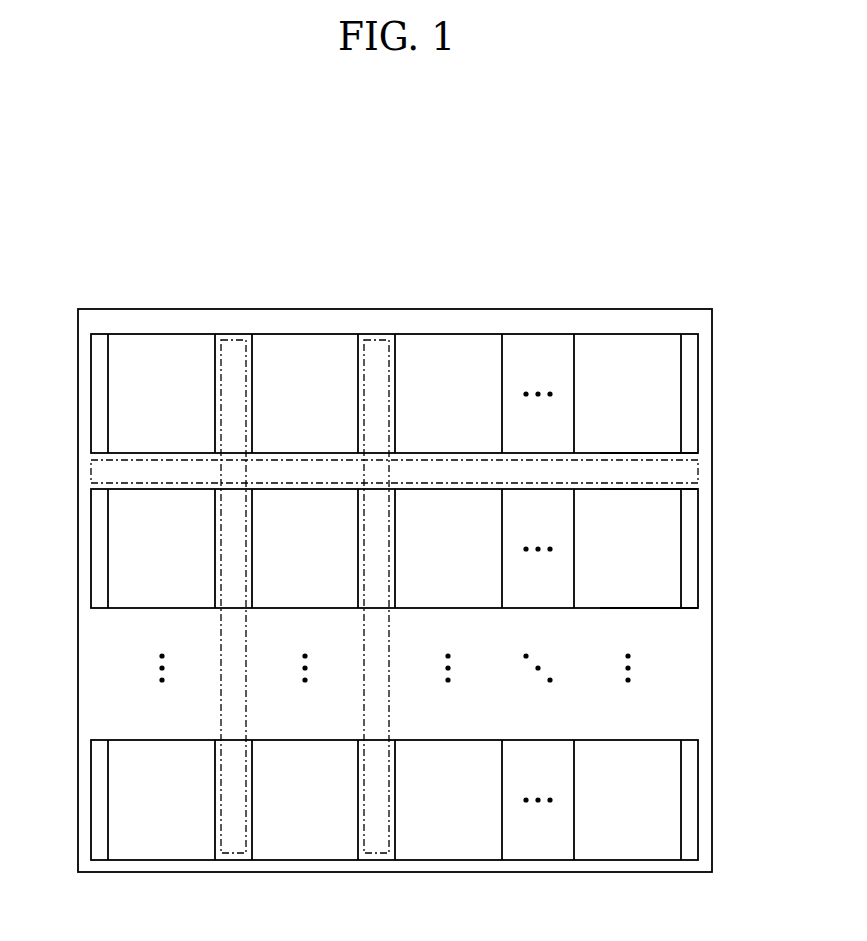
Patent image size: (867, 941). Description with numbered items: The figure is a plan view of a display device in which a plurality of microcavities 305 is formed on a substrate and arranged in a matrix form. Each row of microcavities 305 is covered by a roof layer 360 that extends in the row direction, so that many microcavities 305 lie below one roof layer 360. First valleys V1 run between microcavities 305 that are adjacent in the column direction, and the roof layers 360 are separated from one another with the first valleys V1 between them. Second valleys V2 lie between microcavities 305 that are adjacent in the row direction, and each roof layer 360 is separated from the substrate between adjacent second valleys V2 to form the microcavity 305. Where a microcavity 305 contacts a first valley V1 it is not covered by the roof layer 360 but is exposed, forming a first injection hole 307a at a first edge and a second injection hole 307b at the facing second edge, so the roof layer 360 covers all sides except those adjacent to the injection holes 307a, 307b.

The microcavity 305 is at (107, 366).
The roof layer 360 is at (91, 410).
The first valley V1 is at (90, 470).
The second valley V2 is at (233, 340).
The first injection hole 307a is at (657, 489).
The second injection hole 307b is at (663, 453).